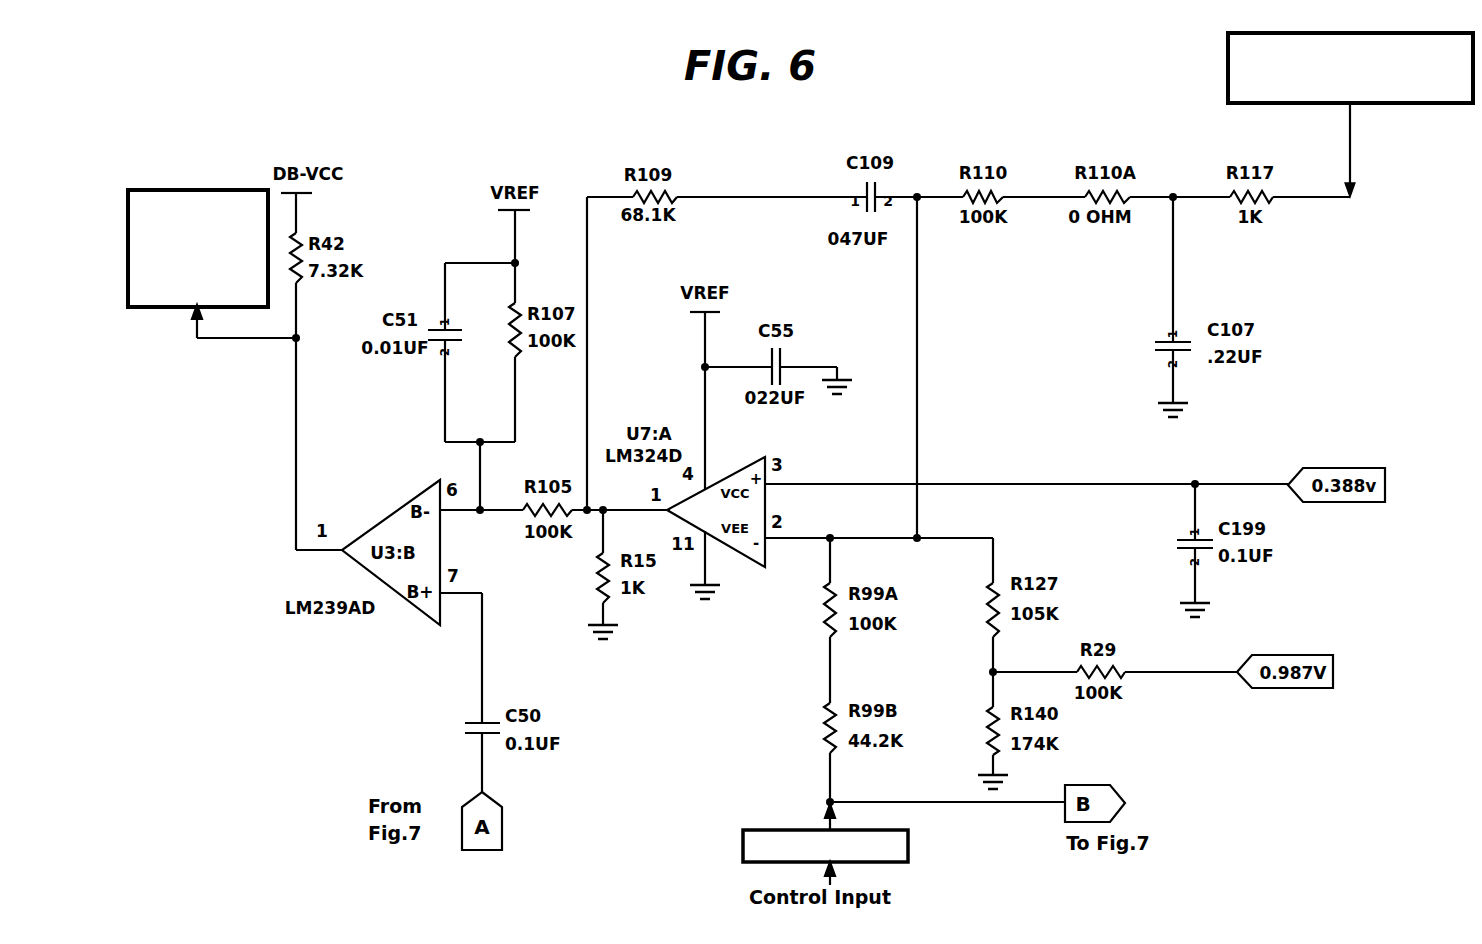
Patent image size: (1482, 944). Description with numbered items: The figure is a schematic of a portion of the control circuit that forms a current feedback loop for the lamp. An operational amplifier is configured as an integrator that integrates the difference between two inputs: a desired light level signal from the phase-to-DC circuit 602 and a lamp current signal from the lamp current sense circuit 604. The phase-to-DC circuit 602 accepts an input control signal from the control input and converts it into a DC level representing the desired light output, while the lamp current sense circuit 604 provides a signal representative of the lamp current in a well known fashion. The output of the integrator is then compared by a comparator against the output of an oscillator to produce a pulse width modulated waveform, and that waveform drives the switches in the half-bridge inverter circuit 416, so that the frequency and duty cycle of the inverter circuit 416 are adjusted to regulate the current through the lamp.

The inverter circuit 416 is at (255, 216).
The lamp current sense circuit 604 is at (1432, 56).
The phase-to-DC circuit 602 is at (908, 840).